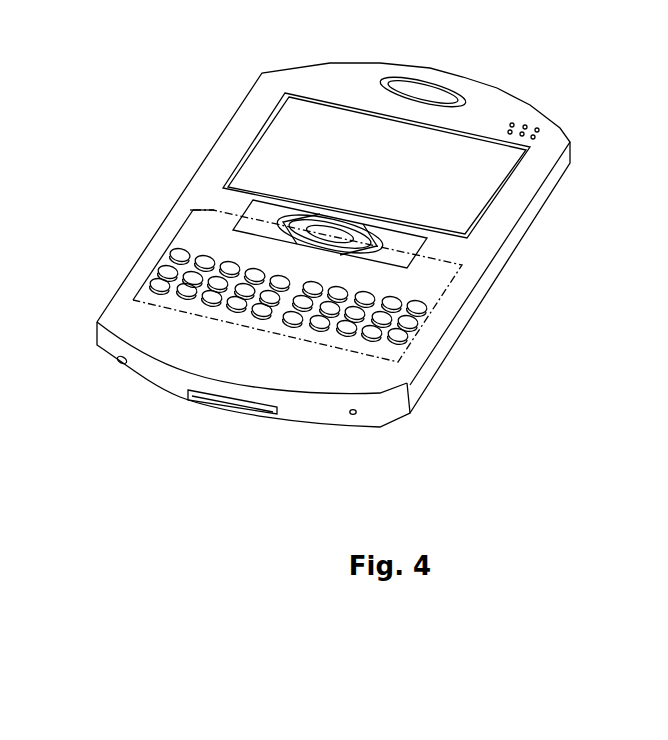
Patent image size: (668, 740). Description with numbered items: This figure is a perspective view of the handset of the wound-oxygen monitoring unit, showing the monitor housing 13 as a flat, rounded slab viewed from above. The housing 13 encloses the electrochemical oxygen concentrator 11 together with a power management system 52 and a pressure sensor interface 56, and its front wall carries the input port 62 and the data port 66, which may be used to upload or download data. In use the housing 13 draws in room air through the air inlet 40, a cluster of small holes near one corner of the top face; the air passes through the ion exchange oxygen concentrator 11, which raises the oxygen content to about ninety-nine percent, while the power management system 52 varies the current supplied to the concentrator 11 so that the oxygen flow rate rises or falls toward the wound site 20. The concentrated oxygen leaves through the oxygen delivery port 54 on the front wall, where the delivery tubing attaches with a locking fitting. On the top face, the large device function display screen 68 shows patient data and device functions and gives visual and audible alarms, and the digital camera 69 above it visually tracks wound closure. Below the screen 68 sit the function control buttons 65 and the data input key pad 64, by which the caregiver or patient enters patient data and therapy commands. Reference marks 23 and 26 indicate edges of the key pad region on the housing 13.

The electrochemical oxygen concentrator 11 is at (212, 208).
The housing 13 is at (562, 128).
The wound site 20 is at (283, 343).
The keyboard region edge 23 is at (128, 280).
The keyboard region corner 26 is at (195, 208).
The air inlet 40 is at (513, 124).
The power management system 52 is at (413, 338).
The oxygen delivery port 54 is at (360, 417).
The pressure sensor interface 56 is at (168, 252).
The input port 62 is at (123, 370).
The data input key pad 64 is at (420, 315).
The function control buttons 65 is at (417, 245).
The data port 66 is at (233, 409).
The device function display screen 68 is at (483, 172).
The digital camera 69 is at (401, 89).